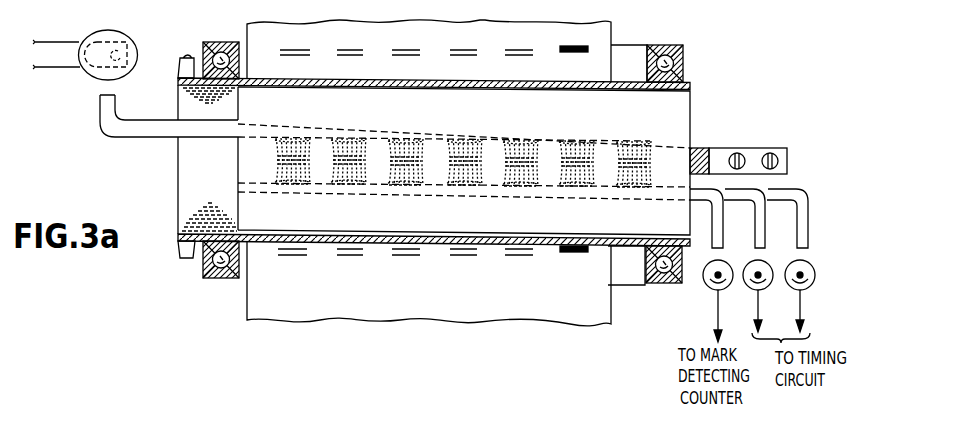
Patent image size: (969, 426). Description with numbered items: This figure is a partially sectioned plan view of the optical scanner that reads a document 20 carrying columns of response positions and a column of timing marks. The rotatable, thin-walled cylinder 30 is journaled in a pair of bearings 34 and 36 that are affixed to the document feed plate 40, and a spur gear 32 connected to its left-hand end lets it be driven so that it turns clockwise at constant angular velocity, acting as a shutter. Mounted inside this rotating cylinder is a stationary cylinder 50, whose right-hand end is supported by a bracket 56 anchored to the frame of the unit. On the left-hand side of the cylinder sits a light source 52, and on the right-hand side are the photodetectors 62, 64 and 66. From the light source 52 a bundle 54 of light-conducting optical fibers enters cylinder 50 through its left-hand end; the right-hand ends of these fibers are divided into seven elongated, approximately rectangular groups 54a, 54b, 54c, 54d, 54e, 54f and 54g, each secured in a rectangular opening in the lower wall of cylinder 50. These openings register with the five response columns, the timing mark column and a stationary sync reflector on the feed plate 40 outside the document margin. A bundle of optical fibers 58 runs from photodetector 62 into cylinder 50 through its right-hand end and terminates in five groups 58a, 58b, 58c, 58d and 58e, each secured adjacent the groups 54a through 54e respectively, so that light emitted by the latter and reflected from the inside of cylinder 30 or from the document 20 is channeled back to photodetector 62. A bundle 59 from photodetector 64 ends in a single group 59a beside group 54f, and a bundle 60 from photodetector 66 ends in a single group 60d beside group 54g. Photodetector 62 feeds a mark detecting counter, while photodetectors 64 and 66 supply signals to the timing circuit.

The document 20 is at (421, 24).
The rotatable thin-walled cylinder 30 is at (177, 233).
The spur gear 32 is at (185, 56).
The bearing 34 is at (211, 280).
The bearing 36 is at (649, 287).
The document feed plate 40 is at (626, 53).
The stationary cylinder 50 is at (684, 100).
The light source 52 is at (126, 32).
The bundle of optical fibers 54 is at (134, 117).
The group of optical fibers 54a is at (308, 138).
The group of optical fibers 54b is at (367, 139).
The group of optical fibers 54c is at (423, 140).
The group of optical fibers 54d is at (481, 140).
The group of optical fibers 54e is at (537, 141).
The group of optical fibers 54f is at (592, 141).
The group of optical fibers 54g is at (648, 142).
The bracket 56 is at (719, 147).
The bundle of optical fibers 58 is at (725, 233).
The group of optical fibers 58a is at (279, 186).
The group of optical fibers 58b is at (334, 188).
The group of optical fibers 58c is at (390, 188).
The group of optical fibers 58d is at (453, 188).
The group of optical fibers 58e is at (506, 189).
The bundle of optical fibers 59 is at (762, 220).
The group of optical fibers 59a is at (562, 189).
The bundle of optical fibers 60 is at (808, 215).
The coil lead 60d is at (620, 198).
The photodetector 62 is at (710, 289).
The photodetector 64 is at (760, 290).
The photodetector 66 is at (816, 273).